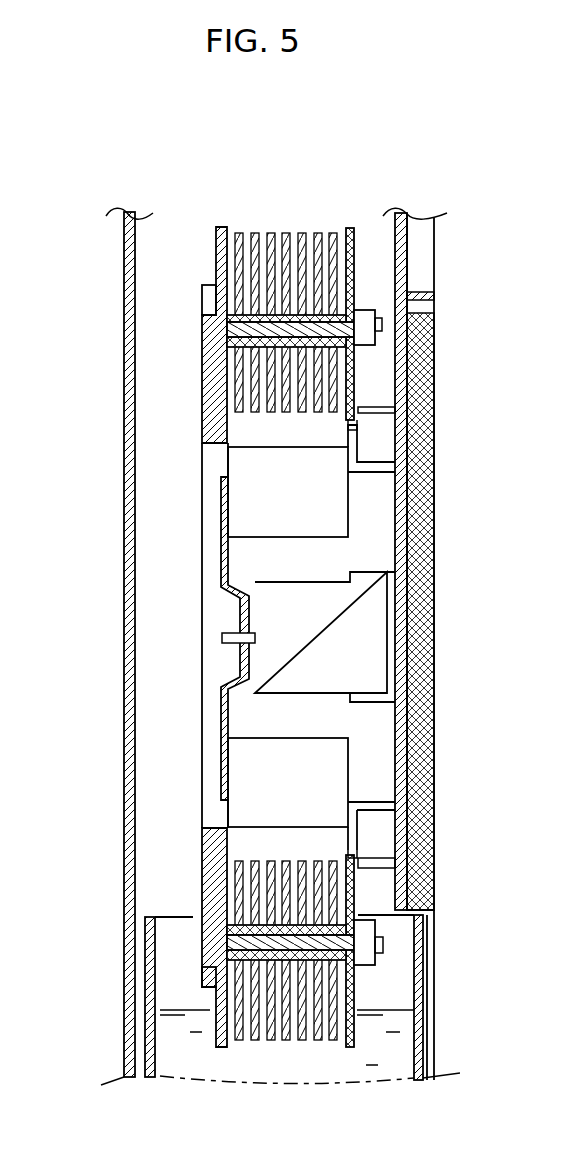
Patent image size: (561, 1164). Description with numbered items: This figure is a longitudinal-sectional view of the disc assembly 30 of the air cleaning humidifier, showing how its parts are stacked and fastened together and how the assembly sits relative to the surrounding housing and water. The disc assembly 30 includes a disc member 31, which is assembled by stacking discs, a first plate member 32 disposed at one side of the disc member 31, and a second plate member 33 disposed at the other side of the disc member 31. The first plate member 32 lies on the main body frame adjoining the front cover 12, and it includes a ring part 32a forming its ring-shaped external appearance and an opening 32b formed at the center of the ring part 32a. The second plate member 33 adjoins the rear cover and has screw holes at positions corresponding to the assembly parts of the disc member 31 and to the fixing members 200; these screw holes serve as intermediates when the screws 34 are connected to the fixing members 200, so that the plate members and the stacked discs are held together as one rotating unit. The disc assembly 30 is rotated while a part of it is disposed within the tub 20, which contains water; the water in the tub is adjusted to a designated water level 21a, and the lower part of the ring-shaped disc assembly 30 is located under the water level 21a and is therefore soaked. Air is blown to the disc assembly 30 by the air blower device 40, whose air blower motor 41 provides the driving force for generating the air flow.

The front cover 12 is at (124, 258).
The tub 20 is at (150, 940).
The water level 21a is at (390, 1008).
The disc assembly 30 is at (224, 378).
The disc member 31 is at (337, 222).
The first plate member 32 is at (216, 413).
The ring part 32a is at (220, 853).
The opening 32b is at (213, 682).
The second plate member 33 is at (352, 365).
The screws 34 is at (290, 347).
The air blower device 40 is at (243, 492).
The air blower motor 41 is at (262, 618).
The fixing members 200 is at (330, 323).